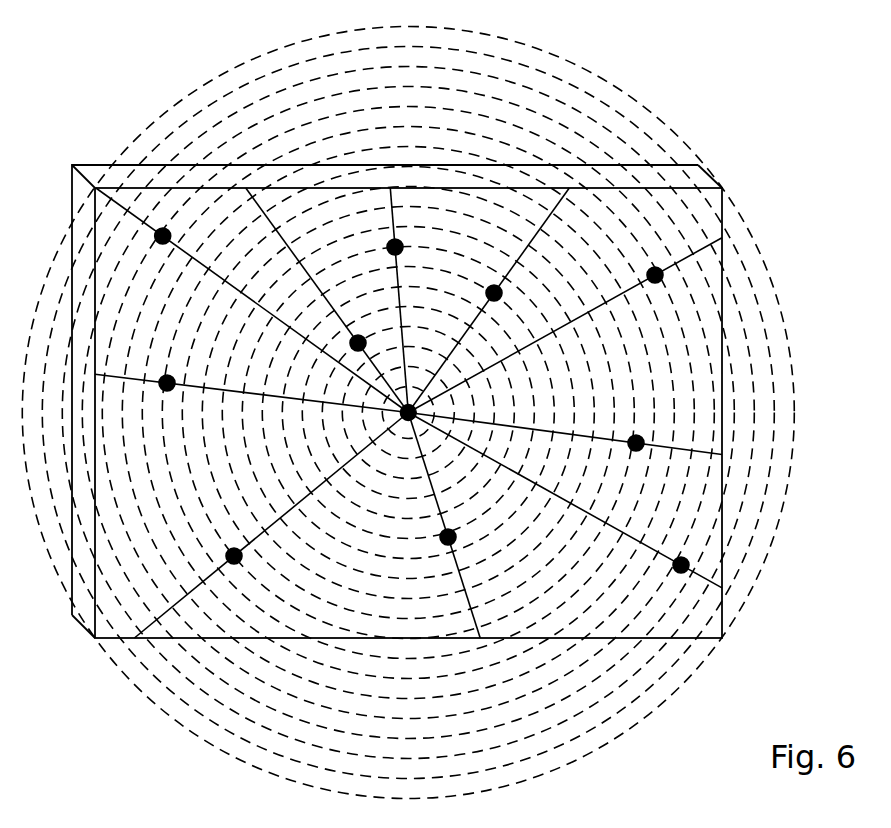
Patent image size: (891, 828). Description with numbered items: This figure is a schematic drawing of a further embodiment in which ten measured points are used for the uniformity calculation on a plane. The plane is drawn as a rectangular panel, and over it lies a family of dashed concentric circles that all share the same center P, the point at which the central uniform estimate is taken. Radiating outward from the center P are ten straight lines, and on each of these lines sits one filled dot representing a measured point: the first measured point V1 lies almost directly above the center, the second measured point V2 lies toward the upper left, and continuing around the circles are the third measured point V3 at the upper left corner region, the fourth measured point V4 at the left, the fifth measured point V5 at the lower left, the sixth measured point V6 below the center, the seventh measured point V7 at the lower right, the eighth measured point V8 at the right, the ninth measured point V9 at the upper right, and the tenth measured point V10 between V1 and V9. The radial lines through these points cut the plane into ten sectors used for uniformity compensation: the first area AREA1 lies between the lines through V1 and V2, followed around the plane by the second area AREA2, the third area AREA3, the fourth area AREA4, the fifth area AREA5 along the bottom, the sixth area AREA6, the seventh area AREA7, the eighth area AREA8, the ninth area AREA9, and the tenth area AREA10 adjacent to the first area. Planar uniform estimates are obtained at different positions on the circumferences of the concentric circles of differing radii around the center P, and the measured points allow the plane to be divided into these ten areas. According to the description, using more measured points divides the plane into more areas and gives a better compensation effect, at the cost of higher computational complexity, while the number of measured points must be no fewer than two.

The center P is at (442, 414).
The measured point V1 is at (408, 300).
The measured point V2 is at (327, 300).
The measured point V3 is at (252, 300).
The measured point V4 is at (251, 385).
The measured point V5 is at (271, 526).
The measured point V6 is at (445, 526).
The measured point V7 is at (565, 500).
The measured point V8 is at (565, 433).
The measured point V9 is at (565, 324).
The measured point V10 is at (488, 300).
The area AREA1 is at (334, 219).
The area AREA2 is at (201, 209).
The area AREA3 is at (141, 313).
The area AREA4 is at (143, 495).
The area AREA5 is at (321, 614).
The area AREA6 is at (612, 615).
The area AREA7 is at (660, 506).
The area AREA8 is at (671, 368).
The area AREA9 is at (601, 223).
The area AREA10 is at (447, 213).